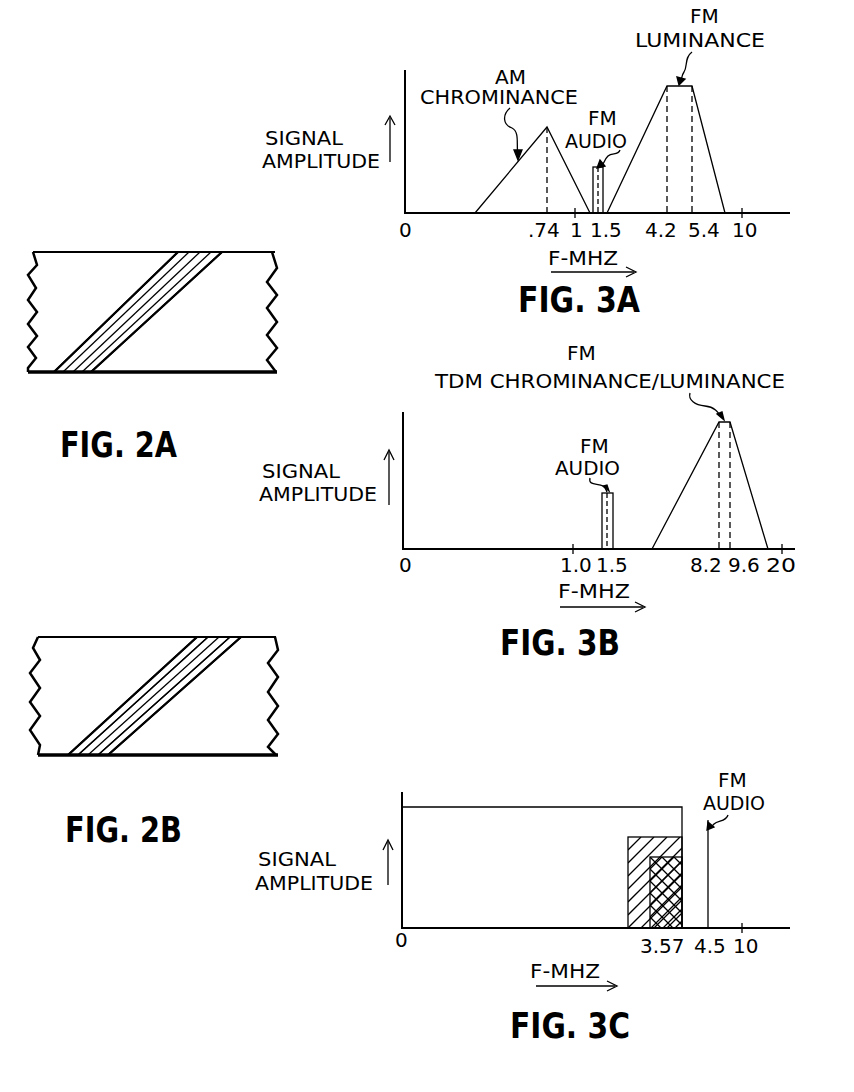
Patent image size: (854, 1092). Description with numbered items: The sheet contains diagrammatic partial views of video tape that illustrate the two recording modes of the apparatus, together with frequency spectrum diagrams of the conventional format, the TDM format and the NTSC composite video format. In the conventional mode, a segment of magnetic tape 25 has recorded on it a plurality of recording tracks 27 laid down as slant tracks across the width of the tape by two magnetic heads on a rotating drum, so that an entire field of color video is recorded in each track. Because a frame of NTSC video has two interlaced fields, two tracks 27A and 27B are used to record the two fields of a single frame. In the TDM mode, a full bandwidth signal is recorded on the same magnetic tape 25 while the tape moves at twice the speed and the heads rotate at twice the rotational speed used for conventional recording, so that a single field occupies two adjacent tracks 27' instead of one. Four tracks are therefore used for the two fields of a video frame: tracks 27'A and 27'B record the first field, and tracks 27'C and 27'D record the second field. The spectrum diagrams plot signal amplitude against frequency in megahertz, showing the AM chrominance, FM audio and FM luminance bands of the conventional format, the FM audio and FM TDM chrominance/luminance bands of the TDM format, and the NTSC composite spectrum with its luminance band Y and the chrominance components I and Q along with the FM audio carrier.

In FIG. 2A, the magnetic tape 25 is at (100, 265).
In FIG. 2B, the magnetic tape 25 is at (208, 735).
In FIG. 2A, the recording tracks 27 is at (138, 333).
In FIG. 2A, the track 27A is at (179, 262).
In FIG. 2A, the track 27B is at (203, 254).
In FIG. 2B, the recording tracks 27' is at (152, 721).
In FIG. 2B, the track 27'A is at (138, 679).
In FIG. 2B, the track 27'B is at (155, 662).
In FIG. 2B, the track 27'C is at (193, 669).
In FIG. 2B, the track 27'D is at (225, 688).
In FIG. 3C, the luminance band Y is at (504, 806).
In FIG. 3C, the I chrominance band I is at (628, 855).
In FIG. 3C, the Q chrominance band Q is at (672, 892).